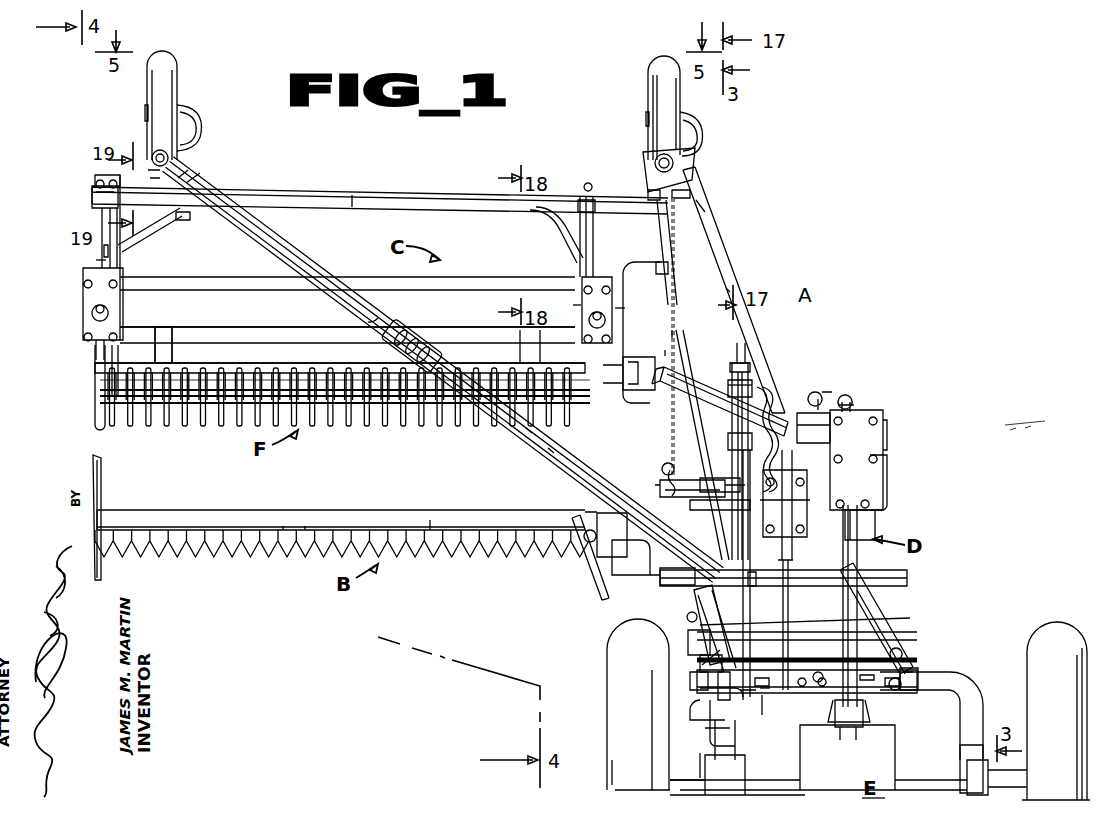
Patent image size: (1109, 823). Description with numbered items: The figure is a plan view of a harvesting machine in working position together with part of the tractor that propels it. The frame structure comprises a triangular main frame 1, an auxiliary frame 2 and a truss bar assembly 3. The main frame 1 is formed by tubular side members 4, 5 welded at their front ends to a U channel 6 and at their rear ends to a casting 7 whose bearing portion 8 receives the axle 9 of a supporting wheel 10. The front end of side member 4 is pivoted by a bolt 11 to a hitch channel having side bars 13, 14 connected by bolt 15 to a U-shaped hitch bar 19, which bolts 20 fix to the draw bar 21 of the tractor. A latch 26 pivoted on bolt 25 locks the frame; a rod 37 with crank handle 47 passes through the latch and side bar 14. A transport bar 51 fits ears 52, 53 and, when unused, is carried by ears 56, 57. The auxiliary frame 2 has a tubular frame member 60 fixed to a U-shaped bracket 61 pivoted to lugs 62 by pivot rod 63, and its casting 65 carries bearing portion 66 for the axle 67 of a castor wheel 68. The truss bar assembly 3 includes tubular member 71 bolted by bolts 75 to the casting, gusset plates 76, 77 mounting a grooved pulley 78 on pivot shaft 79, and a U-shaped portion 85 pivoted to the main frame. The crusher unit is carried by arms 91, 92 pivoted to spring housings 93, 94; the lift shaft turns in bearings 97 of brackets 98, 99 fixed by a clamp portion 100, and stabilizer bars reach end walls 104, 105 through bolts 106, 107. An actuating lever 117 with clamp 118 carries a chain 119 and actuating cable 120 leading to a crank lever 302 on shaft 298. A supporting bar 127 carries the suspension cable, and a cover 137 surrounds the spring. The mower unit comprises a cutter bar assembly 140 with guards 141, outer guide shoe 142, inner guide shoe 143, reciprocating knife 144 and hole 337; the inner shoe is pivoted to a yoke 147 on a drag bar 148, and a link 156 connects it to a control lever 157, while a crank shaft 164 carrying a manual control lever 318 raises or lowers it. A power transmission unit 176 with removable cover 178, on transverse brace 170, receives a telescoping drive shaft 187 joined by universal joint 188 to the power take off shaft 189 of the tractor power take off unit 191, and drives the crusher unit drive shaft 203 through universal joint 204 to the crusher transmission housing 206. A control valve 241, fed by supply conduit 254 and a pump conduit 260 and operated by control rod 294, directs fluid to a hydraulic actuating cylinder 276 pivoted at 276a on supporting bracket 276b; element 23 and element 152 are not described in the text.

The triangular main frame 1 is at (732, 290).
The auxiliary frame 2 is at (436, 198).
The truss bar assembly 3 is at (552, 451).
The tubular side member 4 is at (870, 638).
The tubular side member 5 is at (690, 420).
The U channel 6 is at (822, 655).
The casting 7 is at (646, 165).
The bearing portion 8 is at (692, 165).
The axle 9 is at (695, 134).
The supporting wheel 10 is at (667, 89).
The bolt 11 is at (903, 648).
The side bar 13 is at (910, 668).
The side bar 14 is at (716, 693).
The bolt 15 is at (940, 683).
The U-shaped hitch bar 19 is at (818, 676).
The bolts 20 is at (180, 224).
The draw bar 21 is at (718, 760).
The bracket 23 is at (882, 520).
The bolt 25 is at (712, 666).
The latch 26 is at (705, 650).
The rod 37 is at (695, 635).
The crank handle 47 is at (700, 680).
The transport bar 51 is at (790, 685).
The ear 52 is at (752, 622).
The ear 53 is at (766, 690).
The ear 56 is at (760, 677).
The ear 57 is at (892, 678).
The tubular frame member 60 is at (174, 183).
The U-shaped bracket 61 is at (658, 228).
The lugs 62 is at (650, 191).
The pivot rod 63 is at (668, 262).
The casting 65 is at (150, 170).
The bearing portion 66 is at (156, 152).
The axle 67 is at (188, 127).
The castor wheel 68 is at (167, 73).
The tubular member 71 is at (310, 274).
The bolts 75 is at (198, 177).
The gusset plate 76 is at (352, 295).
The gusset plate 77 is at (378, 304).
The grooved pulley 78 is at (384, 331).
The pivot shaft 79 is at (400, 358).
The U-shaped portion 85 is at (648, 558).
The arm 91 is at (580, 268).
The arm 92 is at (118, 268).
The spring housing 93 is at (626, 306).
The spring housing 94 is at (92, 306).
The bearings 97 is at (97, 214).
The bracket 98 is at (588, 186).
The bracket 99 is at (100, 181).
The clamp portion 100 is at (112, 178).
The end wall 104 is at (102, 252).
The end wall 105 is at (590, 378).
The bolt 106 is at (96, 260).
The bolt 107 is at (570, 296).
The actuating lever 117 is at (702, 209).
The clamp 118 is at (687, 192).
The chain 119 is at (680, 276).
The actuating cable 120 is at (672, 442).
The supporting bar 127 is at (250, 340).
The cover 137 is at (532, 433).
The cutter bar assembly 140 is at (380, 520).
The guards 141 is at (342, 562).
The outer guide shoe 142 is at (100, 500).
The inner guide shoe 143 is at (590, 581).
The reciprocating knife 144 is at (304, 528).
The yoke 147 is at (565, 516).
The drag bar 148 is at (668, 492).
The rail 152 is at (904, 581).
The link 156 is at (672, 583).
The control lever 157 is at (700, 618).
The crank shaft 164 is at (756, 578).
The transverse brace 170 is at (820, 481).
The power transmission unit 176 is at (868, 456).
The removable cover 178 is at (866, 437).
The telescoping drive shaft 187 is at (874, 565).
The universal joint 188 is at (835, 712).
The power take off shaft 189 is at (848, 728).
The power take off unit 191 is at (848, 798).
The crusher unit drive shaft 203 is at (768, 400).
The universal joint 204 is at (666, 351).
The crusher transmission housing 206 is at (676, 332).
The control valve 241 is at (810, 485).
The supply conduit 254 is at (858, 390).
The conduit 260 is at (860, 396).
The hydraulic actuating cylinder 276 is at (738, 422).
The pivot 276a is at (746, 382).
The supporting bracket 276b is at (758, 354).
The control rod 294 is at (880, 619).
The shaft 298 is at (702, 480).
The crank lever 302 is at (666, 473).
The manual control lever 318 is at (764, 705).
The hole 337 is at (432, 519).